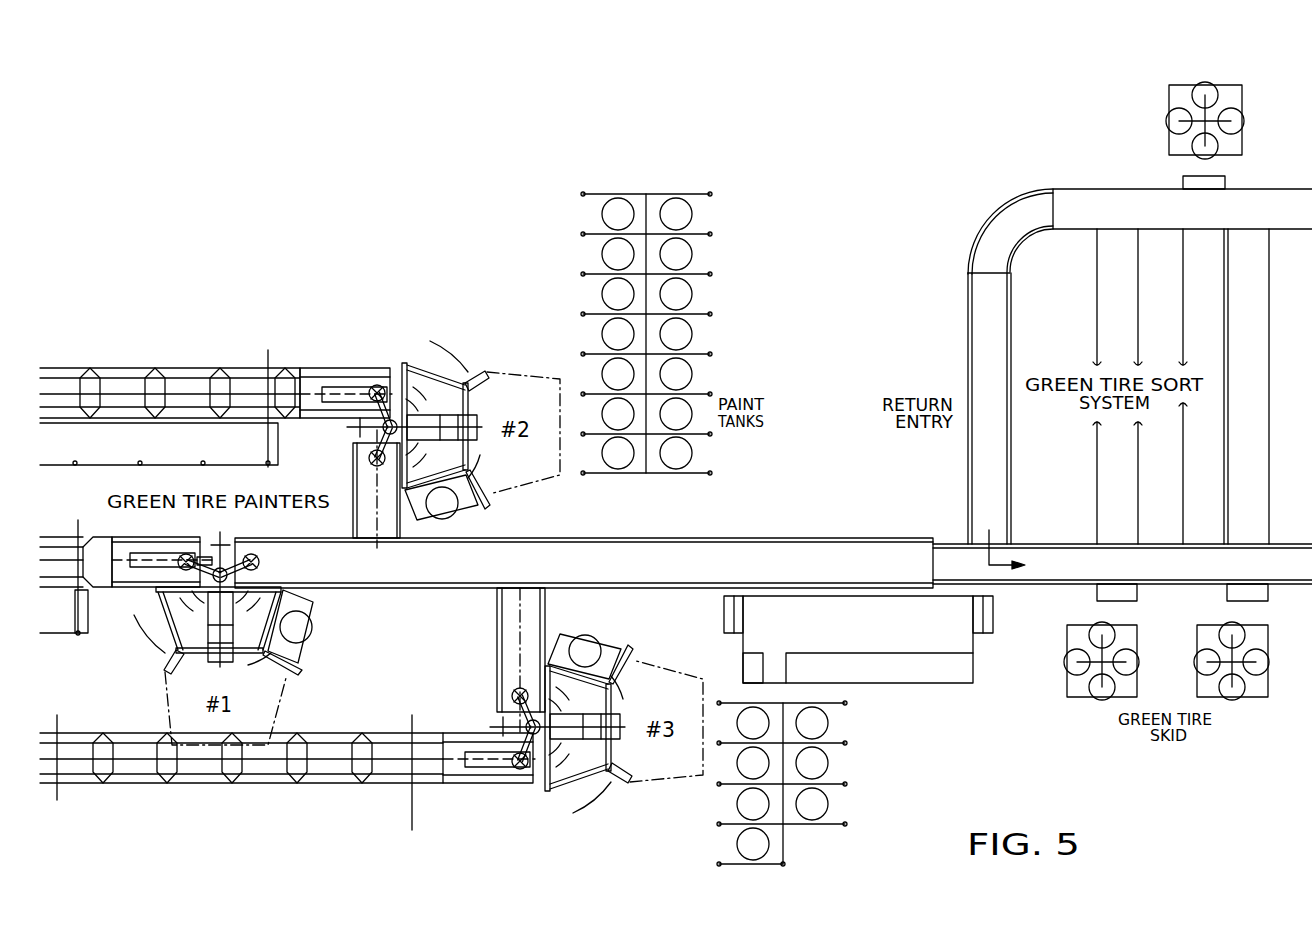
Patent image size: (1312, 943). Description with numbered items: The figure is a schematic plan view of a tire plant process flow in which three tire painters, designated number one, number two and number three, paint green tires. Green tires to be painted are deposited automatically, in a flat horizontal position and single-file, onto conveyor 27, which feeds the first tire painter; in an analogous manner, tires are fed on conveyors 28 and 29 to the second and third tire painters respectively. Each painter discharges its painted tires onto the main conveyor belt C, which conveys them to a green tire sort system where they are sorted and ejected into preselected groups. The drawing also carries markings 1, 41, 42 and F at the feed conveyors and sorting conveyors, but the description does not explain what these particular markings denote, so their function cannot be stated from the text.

The green tire sort lane direction 1 is at (1204, 522).
The conveyor 27 is at (128, 588).
The conveyor 28 is at (107, 375).
The conveyor 29 is at (215, 783).
The sort system lane 41 is at (1248, 260).
The sort system lane 42 is at (1117, 260).
The main conveyor belt C is at (379, 567).
The conveyor frame reference F is at (258, 365).